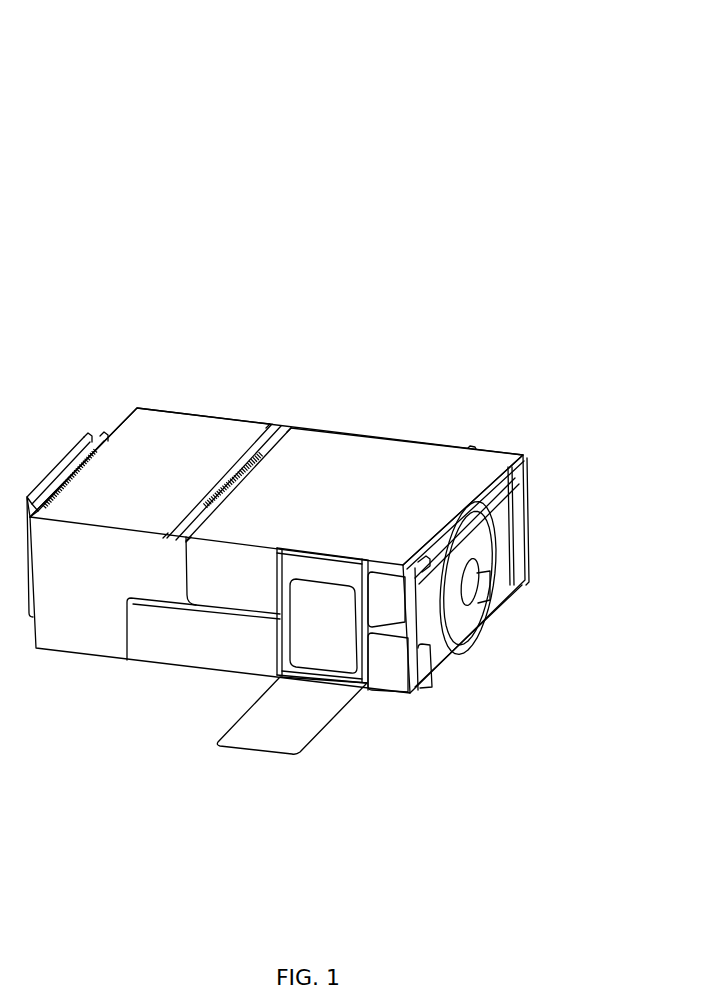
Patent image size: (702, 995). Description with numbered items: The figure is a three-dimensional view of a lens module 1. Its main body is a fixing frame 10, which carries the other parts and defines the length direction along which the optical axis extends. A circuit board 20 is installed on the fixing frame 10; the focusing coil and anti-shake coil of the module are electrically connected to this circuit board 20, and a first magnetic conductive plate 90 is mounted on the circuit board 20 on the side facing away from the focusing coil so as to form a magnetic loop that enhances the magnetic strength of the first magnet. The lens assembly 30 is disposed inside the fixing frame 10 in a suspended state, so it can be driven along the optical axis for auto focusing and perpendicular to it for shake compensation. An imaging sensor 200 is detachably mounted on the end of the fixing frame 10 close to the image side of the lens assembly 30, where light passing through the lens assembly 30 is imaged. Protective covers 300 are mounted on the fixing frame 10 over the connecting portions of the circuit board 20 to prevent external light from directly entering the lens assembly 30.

The lens module 1 is at (257, 53).
The imaging sensor 200 is at (63, 455).
The fixing frame 10 is at (190, 435).
The protective cover 300 is at (400, 463).
The lens assembly 30 is at (457, 583).
The first magnetic conductive plate 90 is at (338, 658).
The circuit board 20 is at (297, 737).